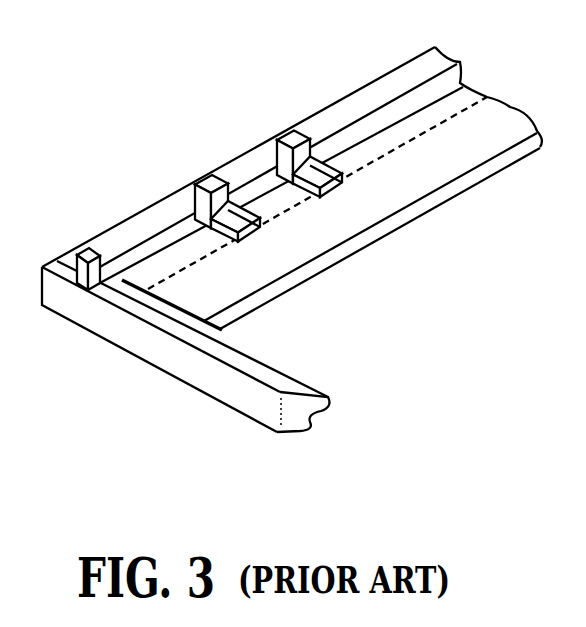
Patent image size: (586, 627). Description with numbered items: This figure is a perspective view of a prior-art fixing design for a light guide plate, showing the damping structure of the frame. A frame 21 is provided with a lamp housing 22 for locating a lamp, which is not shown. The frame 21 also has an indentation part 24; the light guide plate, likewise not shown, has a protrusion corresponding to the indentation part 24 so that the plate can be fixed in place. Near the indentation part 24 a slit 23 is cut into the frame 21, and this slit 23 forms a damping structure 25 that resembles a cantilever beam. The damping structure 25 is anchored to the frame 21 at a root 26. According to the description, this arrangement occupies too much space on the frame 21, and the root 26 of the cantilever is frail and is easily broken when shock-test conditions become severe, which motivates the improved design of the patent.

The frame 21 is at (213, 102).
The lamp housing 22 is at (77, 256).
The slit 23 is at (195, 188).
The indentation part 24 is at (233, 162).
The damping structure 25 is at (342, 179).
The root 26 is at (211, 176).